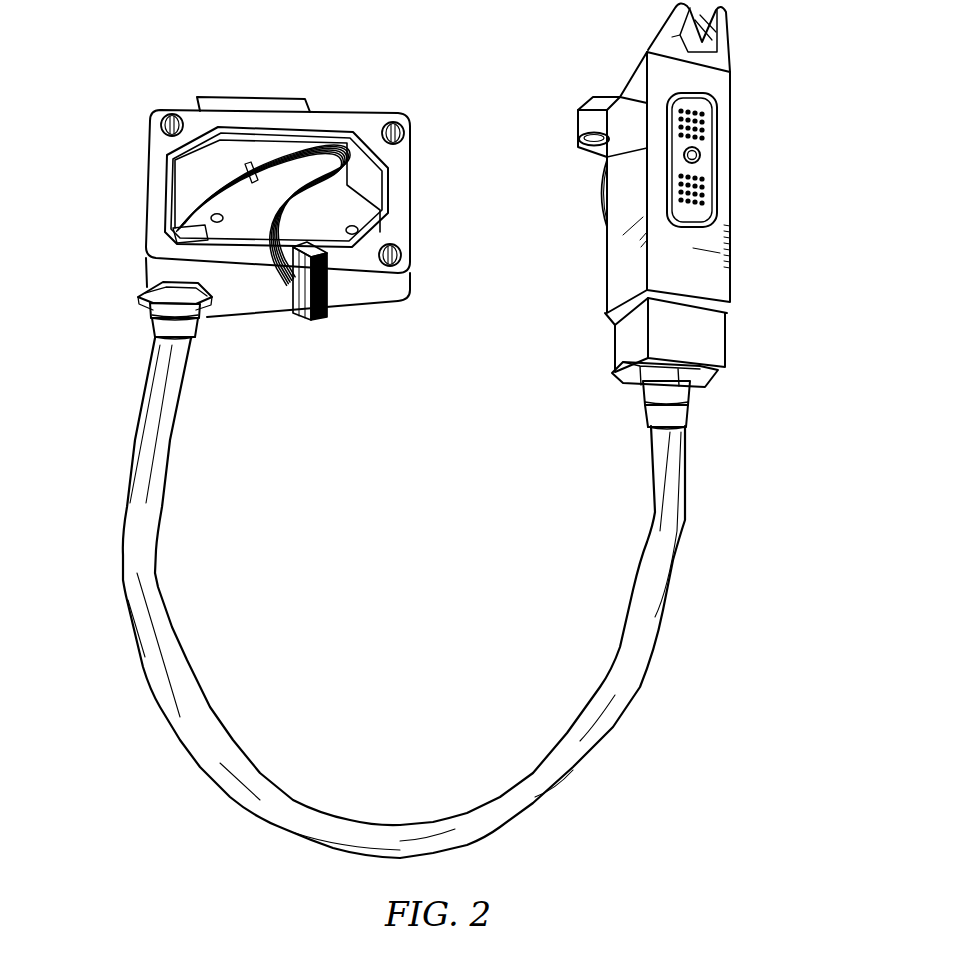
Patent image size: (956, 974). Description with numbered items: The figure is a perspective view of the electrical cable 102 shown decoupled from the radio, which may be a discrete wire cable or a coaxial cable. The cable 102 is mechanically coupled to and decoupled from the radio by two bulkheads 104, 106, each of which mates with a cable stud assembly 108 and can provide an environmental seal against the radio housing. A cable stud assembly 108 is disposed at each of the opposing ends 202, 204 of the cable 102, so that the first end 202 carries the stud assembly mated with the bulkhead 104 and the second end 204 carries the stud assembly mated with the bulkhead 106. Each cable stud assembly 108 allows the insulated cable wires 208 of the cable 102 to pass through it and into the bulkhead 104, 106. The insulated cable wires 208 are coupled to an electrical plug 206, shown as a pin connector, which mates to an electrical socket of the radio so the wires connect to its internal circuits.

The electrical cable 102 is at (694, 523).
The bulkhead 104 is at (414, 107).
The bulkhead 106 is at (744, 117).
The cable stud assembly 108 is at (136, 312).
The opposing end of the cable 202 is at (133, 375).
The opposing end of the cable 204 is at (722, 432).
The electrical plug 206 is at (318, 328).
The insulated cable wires 208 is at (279, 284).